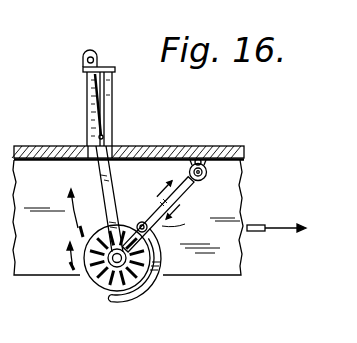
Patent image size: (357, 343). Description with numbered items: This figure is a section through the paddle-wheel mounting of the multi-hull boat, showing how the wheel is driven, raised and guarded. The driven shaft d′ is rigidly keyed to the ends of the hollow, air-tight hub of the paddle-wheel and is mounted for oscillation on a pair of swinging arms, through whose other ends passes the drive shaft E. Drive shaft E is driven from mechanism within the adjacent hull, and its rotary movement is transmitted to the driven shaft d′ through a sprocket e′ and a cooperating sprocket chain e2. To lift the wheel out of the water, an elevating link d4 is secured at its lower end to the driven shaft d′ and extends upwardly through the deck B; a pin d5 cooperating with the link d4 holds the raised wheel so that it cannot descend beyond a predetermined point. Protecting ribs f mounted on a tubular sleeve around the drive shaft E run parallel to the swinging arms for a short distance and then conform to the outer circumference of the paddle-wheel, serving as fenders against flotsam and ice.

The deck B is at (41, 158).
The pin d5 is at (103, 130).
The elevating link d4 is at (113, 188).
The driven shaft d′ is at (114, 268).
The drive shaft E is at (205, 160).
The protecting ribs f is at (143, 226).
The sprocket e′ is at (208, 170).
The sprocket chain e2 is at (162, 226).